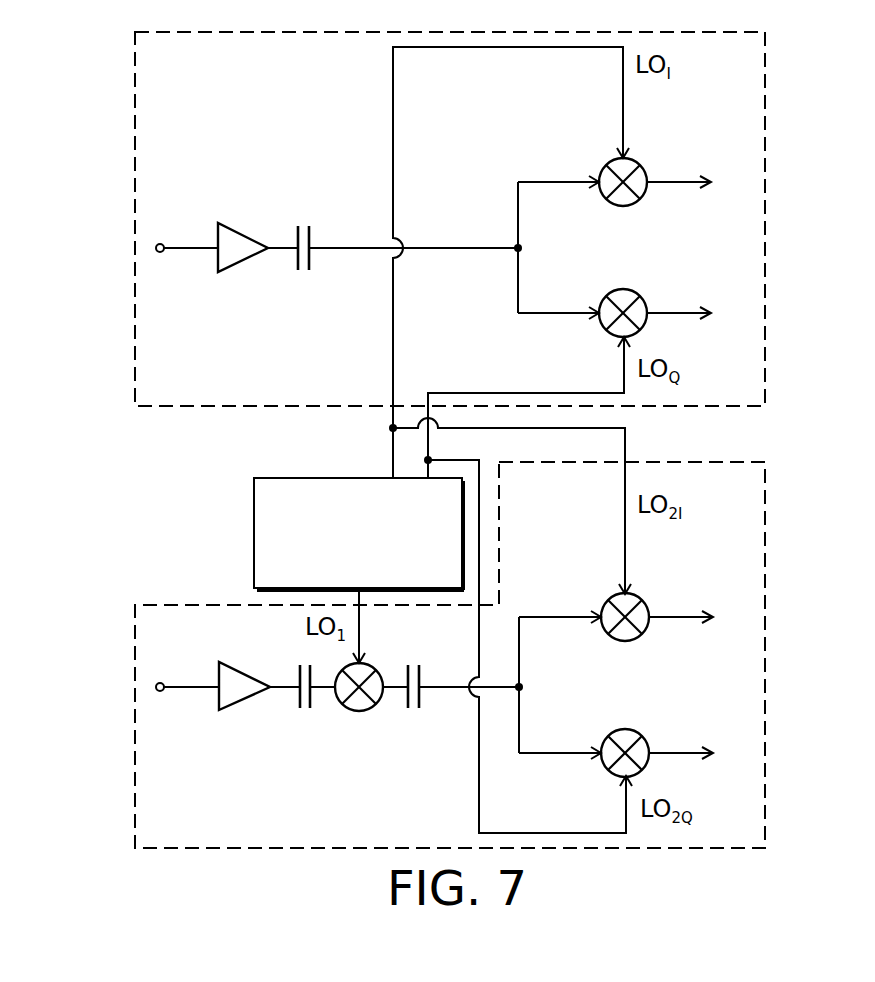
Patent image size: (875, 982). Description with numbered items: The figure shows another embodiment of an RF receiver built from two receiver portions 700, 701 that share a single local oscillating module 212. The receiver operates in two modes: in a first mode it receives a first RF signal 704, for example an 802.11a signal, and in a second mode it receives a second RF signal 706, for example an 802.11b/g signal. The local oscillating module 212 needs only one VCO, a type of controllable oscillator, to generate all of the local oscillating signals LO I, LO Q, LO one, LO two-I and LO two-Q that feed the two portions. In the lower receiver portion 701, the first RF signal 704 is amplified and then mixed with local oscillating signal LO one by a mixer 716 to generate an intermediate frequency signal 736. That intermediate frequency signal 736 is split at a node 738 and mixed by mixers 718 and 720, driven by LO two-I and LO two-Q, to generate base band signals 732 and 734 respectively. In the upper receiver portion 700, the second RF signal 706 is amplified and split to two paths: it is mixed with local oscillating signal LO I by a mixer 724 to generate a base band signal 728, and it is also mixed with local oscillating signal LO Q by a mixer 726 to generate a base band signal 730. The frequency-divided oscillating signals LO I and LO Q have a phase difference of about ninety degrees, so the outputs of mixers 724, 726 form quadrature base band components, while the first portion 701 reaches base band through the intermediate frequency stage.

The receiver portion 700 is at (135, 78).
The receiver portion 701 is at (767, 513).
The first RF signal 704 is at (192, 686).
The second RF signal 706 is at (190, 247).
The local oscillating module 212 is at (254, 537).
The mixer 716 is at (361, 711).
The mixer 718 is at (614, 600).
The mixer 720 is at (614, 736).
The mixer 724 is at (612, 162).
The mixer 726 is at (612, 295).
The base band signal 728 is at (677, 180).
The base band signal 730 is at (677, 311).
The base band signal 732 is at (679, 615).
The base band signal 734 is at (679, 751).
The intermediate frequency signal 736 is at (521, 655).
The signal splitting node 738 is at (520, 220).